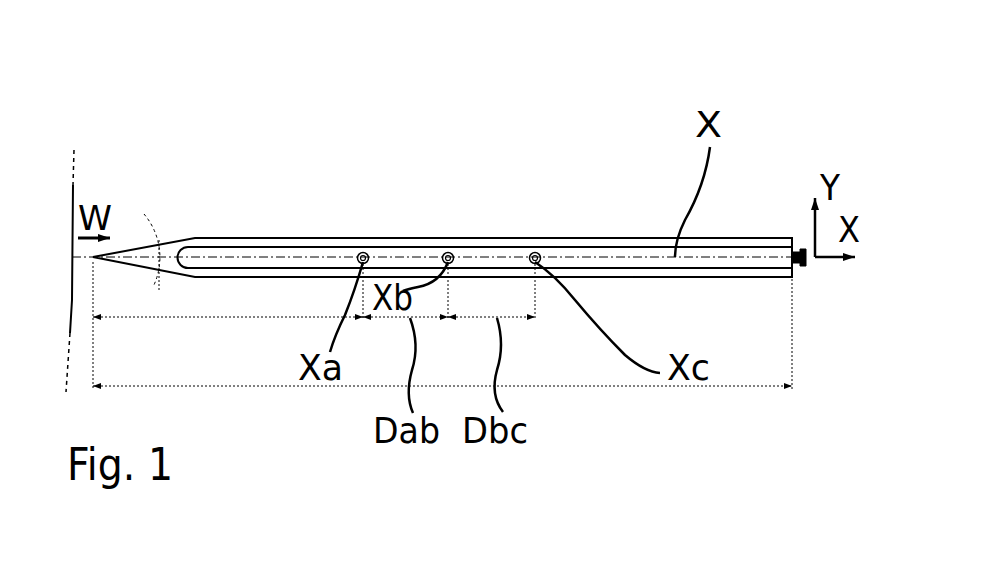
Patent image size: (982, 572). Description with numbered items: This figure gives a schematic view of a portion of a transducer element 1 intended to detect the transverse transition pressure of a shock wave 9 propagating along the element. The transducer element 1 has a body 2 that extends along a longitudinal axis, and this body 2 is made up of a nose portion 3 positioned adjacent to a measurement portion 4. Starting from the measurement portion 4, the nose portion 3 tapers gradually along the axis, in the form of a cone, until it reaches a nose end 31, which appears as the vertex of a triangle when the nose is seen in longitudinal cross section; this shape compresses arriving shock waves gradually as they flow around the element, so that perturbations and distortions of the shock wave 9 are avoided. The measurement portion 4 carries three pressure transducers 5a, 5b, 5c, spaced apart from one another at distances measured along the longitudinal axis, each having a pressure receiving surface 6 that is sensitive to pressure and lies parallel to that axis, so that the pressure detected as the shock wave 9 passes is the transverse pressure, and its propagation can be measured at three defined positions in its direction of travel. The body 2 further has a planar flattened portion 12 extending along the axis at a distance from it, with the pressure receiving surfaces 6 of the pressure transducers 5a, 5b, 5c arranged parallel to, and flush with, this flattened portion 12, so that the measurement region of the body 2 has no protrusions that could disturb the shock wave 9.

The transducer element 1 is at (114, 66).
The body 2 is at (142, 136).
The nose portion 3 is at (173, 268).
The measurement portion 4 is at (565, 324).
The pressure transducer 5a is at (363, 252).
The pressure transducer 5b is at (448, 252).
The pressure transducer 5c is at (535, 252).
The pressure receiving surface 6 is at (493, 156).
The shock wave 9 is at (72, 192).
The flattened portion 12 is at (625, 250).
The nose end 31 is at (93, 260).